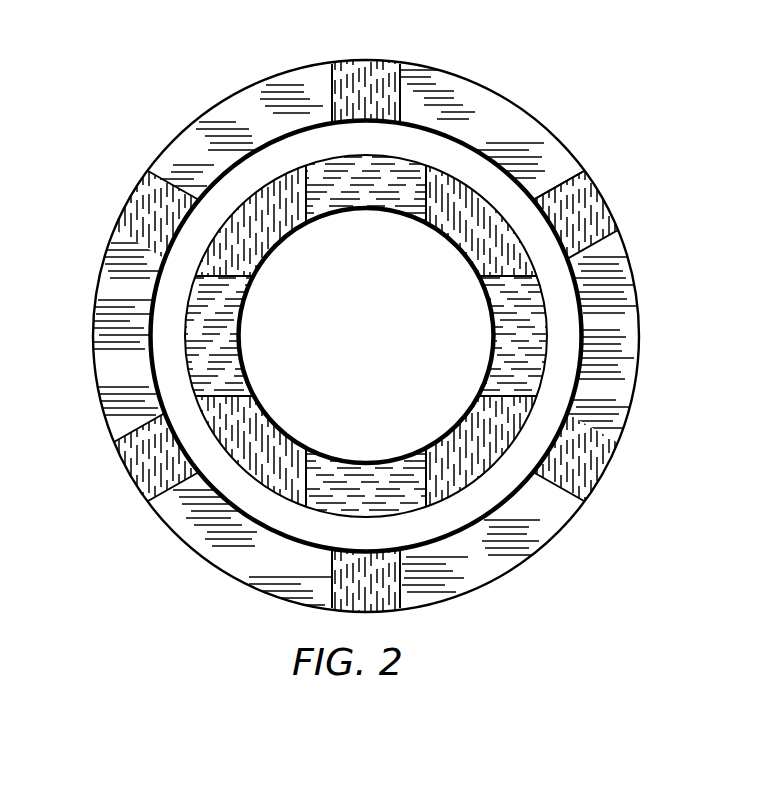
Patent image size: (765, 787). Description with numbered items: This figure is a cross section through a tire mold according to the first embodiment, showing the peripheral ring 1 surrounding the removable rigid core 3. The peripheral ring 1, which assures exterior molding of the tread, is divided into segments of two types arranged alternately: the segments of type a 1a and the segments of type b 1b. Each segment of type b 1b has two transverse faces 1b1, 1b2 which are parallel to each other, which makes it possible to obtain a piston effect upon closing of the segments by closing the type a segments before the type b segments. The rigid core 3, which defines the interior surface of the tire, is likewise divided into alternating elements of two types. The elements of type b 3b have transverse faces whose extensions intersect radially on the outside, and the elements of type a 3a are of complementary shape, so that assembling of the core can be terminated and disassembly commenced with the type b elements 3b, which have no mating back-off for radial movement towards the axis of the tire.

The peripheral ring 1 is at (369, 326).
The segments of type a 1a is at (240, 110).
The segments of type b 1b is at (356, 82).
The transverse face 1b1 is at (556, 181).
The transverse face 1b2 is at (588, 247).
The removable rigid core 3 is at (356, 326).
The elements of type a 3a is at (248, 232).
The elements of type b 3b is at (380, 180).